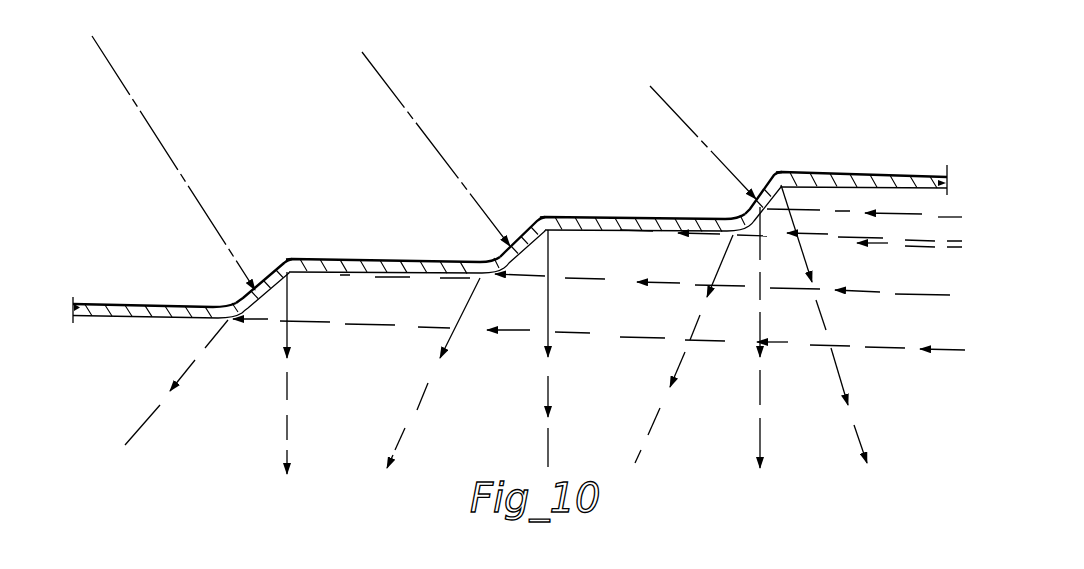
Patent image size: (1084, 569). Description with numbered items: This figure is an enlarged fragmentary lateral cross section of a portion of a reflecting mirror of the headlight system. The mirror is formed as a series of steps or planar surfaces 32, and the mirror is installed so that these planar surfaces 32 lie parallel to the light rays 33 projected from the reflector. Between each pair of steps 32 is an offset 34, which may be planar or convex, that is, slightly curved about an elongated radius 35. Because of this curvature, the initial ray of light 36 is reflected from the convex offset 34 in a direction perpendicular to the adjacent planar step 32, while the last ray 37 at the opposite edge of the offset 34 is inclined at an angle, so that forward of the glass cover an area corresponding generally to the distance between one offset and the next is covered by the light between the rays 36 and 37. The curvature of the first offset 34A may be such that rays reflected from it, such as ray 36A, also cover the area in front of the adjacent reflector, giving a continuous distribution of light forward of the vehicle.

The planar surface 32 is at (157, 303).
The light rays 33 is at (383, 321).
The offset 34 is at (275, 263).
The first offset 34A is at (787, 131).
The elongated radius 35 is at (182, 174).
The initial ray of light 36 is at (288, 406).
The light ray reflected from first offset 36A is at (826, 330).
The last ray 37 is at (180, 378).